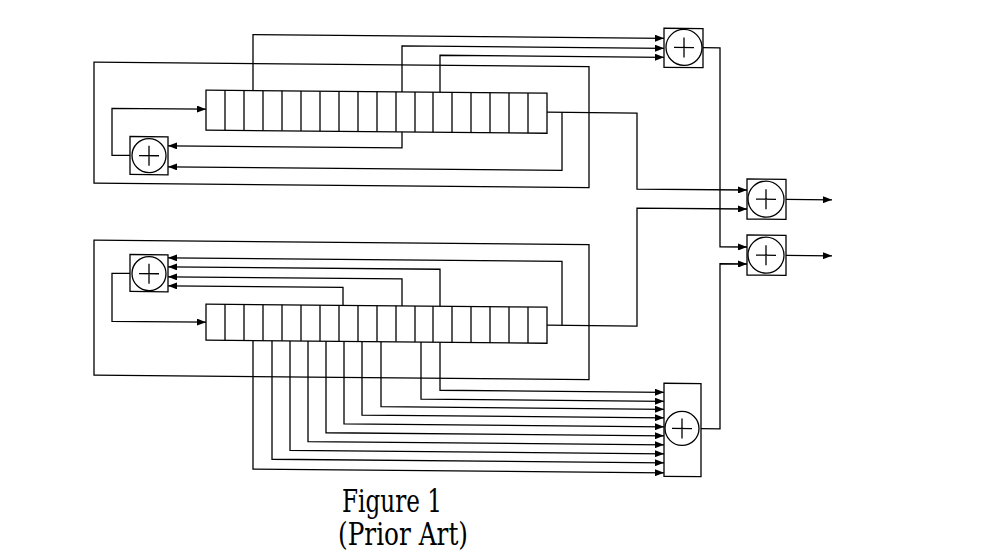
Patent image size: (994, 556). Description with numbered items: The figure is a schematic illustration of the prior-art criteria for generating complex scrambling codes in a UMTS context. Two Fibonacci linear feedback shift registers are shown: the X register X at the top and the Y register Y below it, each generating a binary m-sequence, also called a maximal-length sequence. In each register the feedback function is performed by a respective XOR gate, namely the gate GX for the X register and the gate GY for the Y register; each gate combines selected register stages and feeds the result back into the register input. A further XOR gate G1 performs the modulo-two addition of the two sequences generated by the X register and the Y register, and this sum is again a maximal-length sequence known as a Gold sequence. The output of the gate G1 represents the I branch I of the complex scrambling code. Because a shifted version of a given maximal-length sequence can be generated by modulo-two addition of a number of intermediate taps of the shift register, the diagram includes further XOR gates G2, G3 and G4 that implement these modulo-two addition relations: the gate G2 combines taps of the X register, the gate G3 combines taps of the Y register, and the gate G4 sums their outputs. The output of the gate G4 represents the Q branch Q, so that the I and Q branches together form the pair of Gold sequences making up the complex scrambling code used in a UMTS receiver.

The X LFSR X is at (387, 129).
The Y LFSR Y is at (389, 338).
The XOR gate GX is at (166, 172).
The XOR gate GY is at (148, 293).
The XOR gate G1 is at (784, 173).
The XOR gate G2 is at (700, 23).
The XOR gate G3 is at (697, 468).
The XOR gate G4 is at (784, 271).
The I branch I is at (809, 188).
The Q branch Q is at (809, 243).